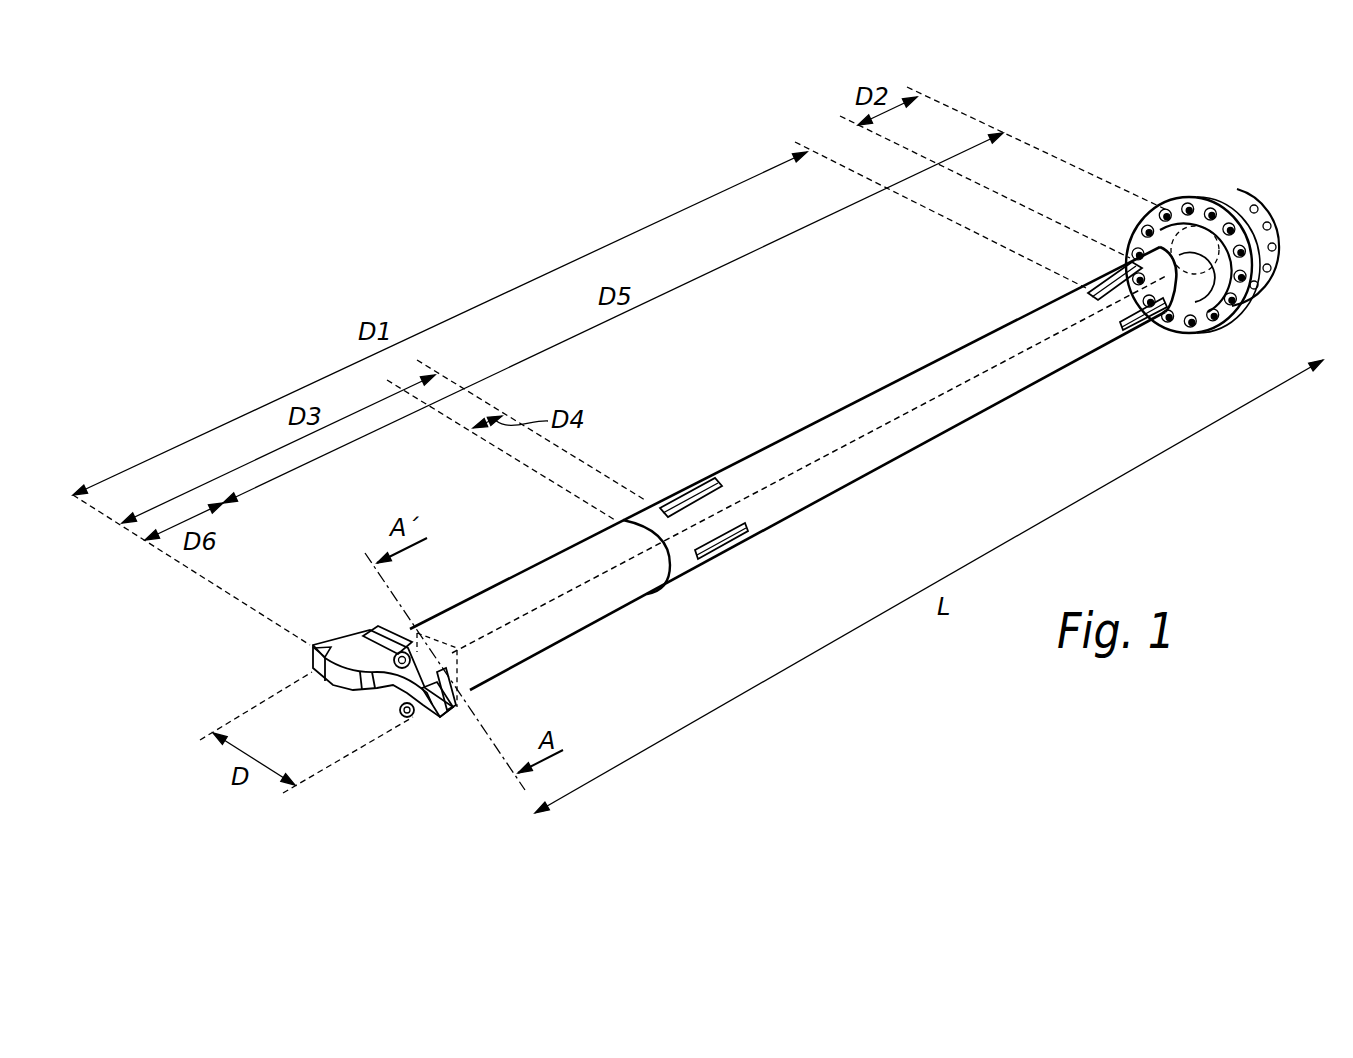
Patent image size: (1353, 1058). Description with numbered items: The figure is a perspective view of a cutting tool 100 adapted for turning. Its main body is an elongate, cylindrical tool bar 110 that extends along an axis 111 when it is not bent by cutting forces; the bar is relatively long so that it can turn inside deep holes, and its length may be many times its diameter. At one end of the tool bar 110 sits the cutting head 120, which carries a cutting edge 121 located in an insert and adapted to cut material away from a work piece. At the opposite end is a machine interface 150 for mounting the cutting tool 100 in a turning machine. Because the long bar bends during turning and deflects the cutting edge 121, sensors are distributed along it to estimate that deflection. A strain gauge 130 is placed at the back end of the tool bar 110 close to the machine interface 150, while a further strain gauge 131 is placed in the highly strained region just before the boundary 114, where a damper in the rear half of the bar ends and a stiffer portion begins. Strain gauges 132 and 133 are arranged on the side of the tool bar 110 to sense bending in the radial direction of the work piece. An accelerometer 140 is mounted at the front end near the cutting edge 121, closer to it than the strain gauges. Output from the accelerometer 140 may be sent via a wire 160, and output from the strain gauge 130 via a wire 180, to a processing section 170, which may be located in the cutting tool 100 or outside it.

The cutting tool 100 is at (838, 604).
The tool bar 110 is at (525, 572).
The axis 111 is at (262, 747).
The boundary 114 is at (618, 521).
The cutting head 120 is at (352, 640).
The cutting edge 121 is at (310, 647).
The strain gauge 130 is at (1097, 283).
The strain gauge 131 is at (703, 480).
The strain gauge 132 is at (1132, 332).
The strain gauge 133 is at (742, 543).
The accelerometer 140 is at (398, 690).
The machine interface 150 is at (1178, 200).
The wire 160 is at (641, 572).
The processing section 170 is at (1222, 200).
The wire 180 is at (1225, 282).